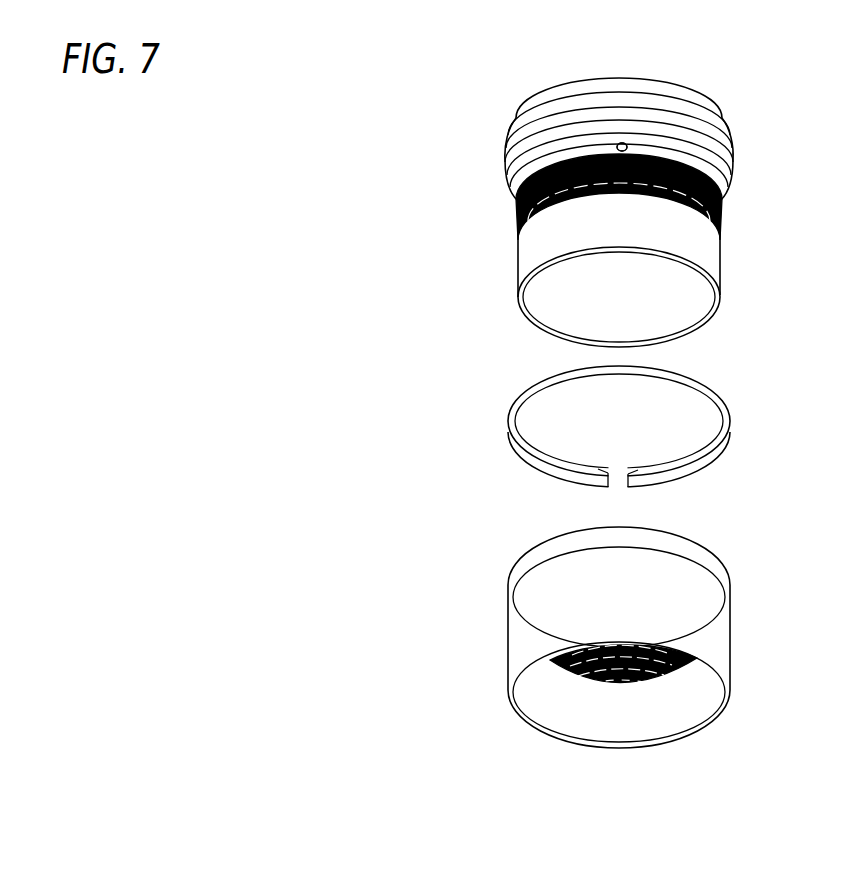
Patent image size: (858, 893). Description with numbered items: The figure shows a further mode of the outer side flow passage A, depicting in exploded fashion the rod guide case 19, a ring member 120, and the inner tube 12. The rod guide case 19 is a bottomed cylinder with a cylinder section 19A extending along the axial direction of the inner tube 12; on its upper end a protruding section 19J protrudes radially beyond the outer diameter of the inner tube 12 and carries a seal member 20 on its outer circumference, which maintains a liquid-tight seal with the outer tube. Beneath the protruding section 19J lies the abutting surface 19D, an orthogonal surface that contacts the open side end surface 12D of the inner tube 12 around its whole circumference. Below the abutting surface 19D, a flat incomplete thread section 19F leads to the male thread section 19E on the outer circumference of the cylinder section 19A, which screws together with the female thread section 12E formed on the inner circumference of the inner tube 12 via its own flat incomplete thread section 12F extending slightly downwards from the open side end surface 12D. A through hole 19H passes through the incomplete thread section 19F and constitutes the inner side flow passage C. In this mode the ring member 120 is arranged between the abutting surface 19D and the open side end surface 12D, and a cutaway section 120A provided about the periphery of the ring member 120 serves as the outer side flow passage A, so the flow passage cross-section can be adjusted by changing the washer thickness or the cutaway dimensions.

The rod guide case 19 is at (648, 198).
The cylinder section 19A is at (710, 258).
The abutting surface 19D is at (725, 188).
The thread section 19E is at (723, 214).
The incomplete thread section 19F is at (692, 165).
The through hole 19H is at (617, 143).
The protruding section 19J is at (667, 107).
The seal member 20 is at (607, 115).
The inner side flow passage C is at (623, 143).
The ring member 120 is at (646, 435).
The cutaway section 120A is at (626, 488).
The outer side flow passage A is at (616, 482).
The inner tube 12 is at (645, 649).
The open side end surface 12D is at (688, 540).
The thread section 12E is at (643, 684).
The incomplete thread section 12F is at (557, 549).